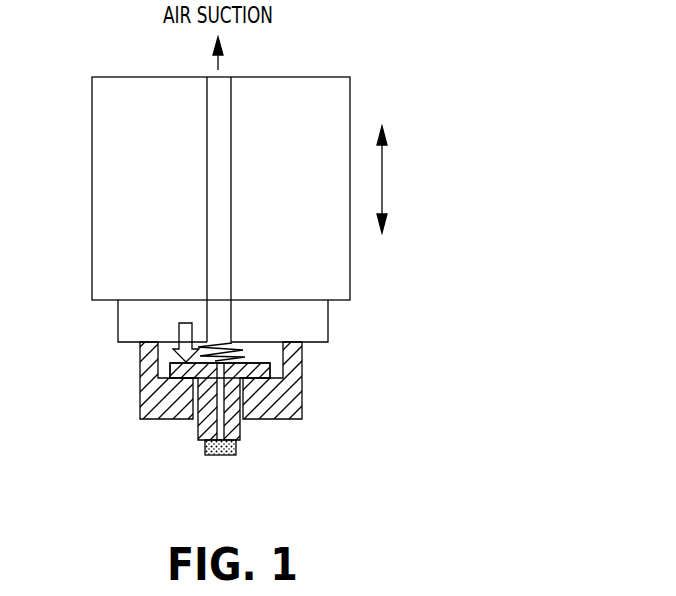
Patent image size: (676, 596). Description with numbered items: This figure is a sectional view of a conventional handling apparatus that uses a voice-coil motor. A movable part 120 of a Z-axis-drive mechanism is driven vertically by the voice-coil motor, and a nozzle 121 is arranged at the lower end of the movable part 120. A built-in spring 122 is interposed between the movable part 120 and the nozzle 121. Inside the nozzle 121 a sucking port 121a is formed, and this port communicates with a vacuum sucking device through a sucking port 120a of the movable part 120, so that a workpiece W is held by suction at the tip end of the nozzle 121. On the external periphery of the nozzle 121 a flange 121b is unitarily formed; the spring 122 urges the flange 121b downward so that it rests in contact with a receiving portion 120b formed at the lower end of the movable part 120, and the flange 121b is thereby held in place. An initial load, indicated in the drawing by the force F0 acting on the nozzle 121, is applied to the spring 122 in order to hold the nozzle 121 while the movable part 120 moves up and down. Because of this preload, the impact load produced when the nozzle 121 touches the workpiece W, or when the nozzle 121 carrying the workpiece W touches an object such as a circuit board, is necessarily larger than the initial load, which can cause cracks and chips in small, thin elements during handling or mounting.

The movable part 120 is at (113, 211).
The sucking port 120a is at (216, 128).
The receiving portion 120b is at (160, 395).
The pressing force F0 is at (180, 333).
The spring 122 is at (245, 357).
The nozzle 121 is at (199, 428).
The sucking port 121a is at (221, 419).
The flange 121b is at (262, 376).
The workpiece W is at (222, 455).